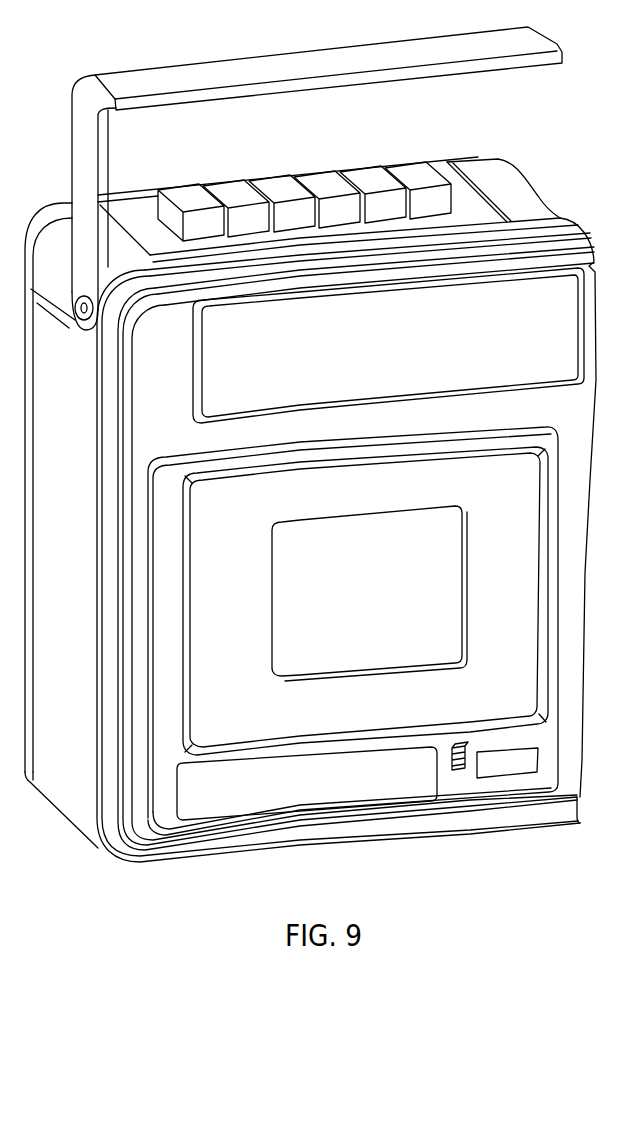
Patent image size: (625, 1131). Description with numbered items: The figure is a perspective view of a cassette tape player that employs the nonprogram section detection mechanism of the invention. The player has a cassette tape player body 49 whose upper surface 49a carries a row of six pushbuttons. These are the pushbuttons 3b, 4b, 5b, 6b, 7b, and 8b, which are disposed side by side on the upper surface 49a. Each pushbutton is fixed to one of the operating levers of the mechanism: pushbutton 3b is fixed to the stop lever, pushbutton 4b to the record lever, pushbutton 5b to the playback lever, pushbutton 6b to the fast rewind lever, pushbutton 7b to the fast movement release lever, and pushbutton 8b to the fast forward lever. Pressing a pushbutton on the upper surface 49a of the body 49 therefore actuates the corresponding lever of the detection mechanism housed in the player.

The cassette tape player body 49 is at (150, 845).
The upper surface 49a is at (134, 206).
The pushbutton 8b is at (190, 192).
The pushbutton 7b is at (238, 186).
The pushbutton 6b is at (281, 184).
The pushbutton 5b is at (327, 174).
The pushbutton 4b is at (371, 174).
The pushbutton 3b is at (416, 168).